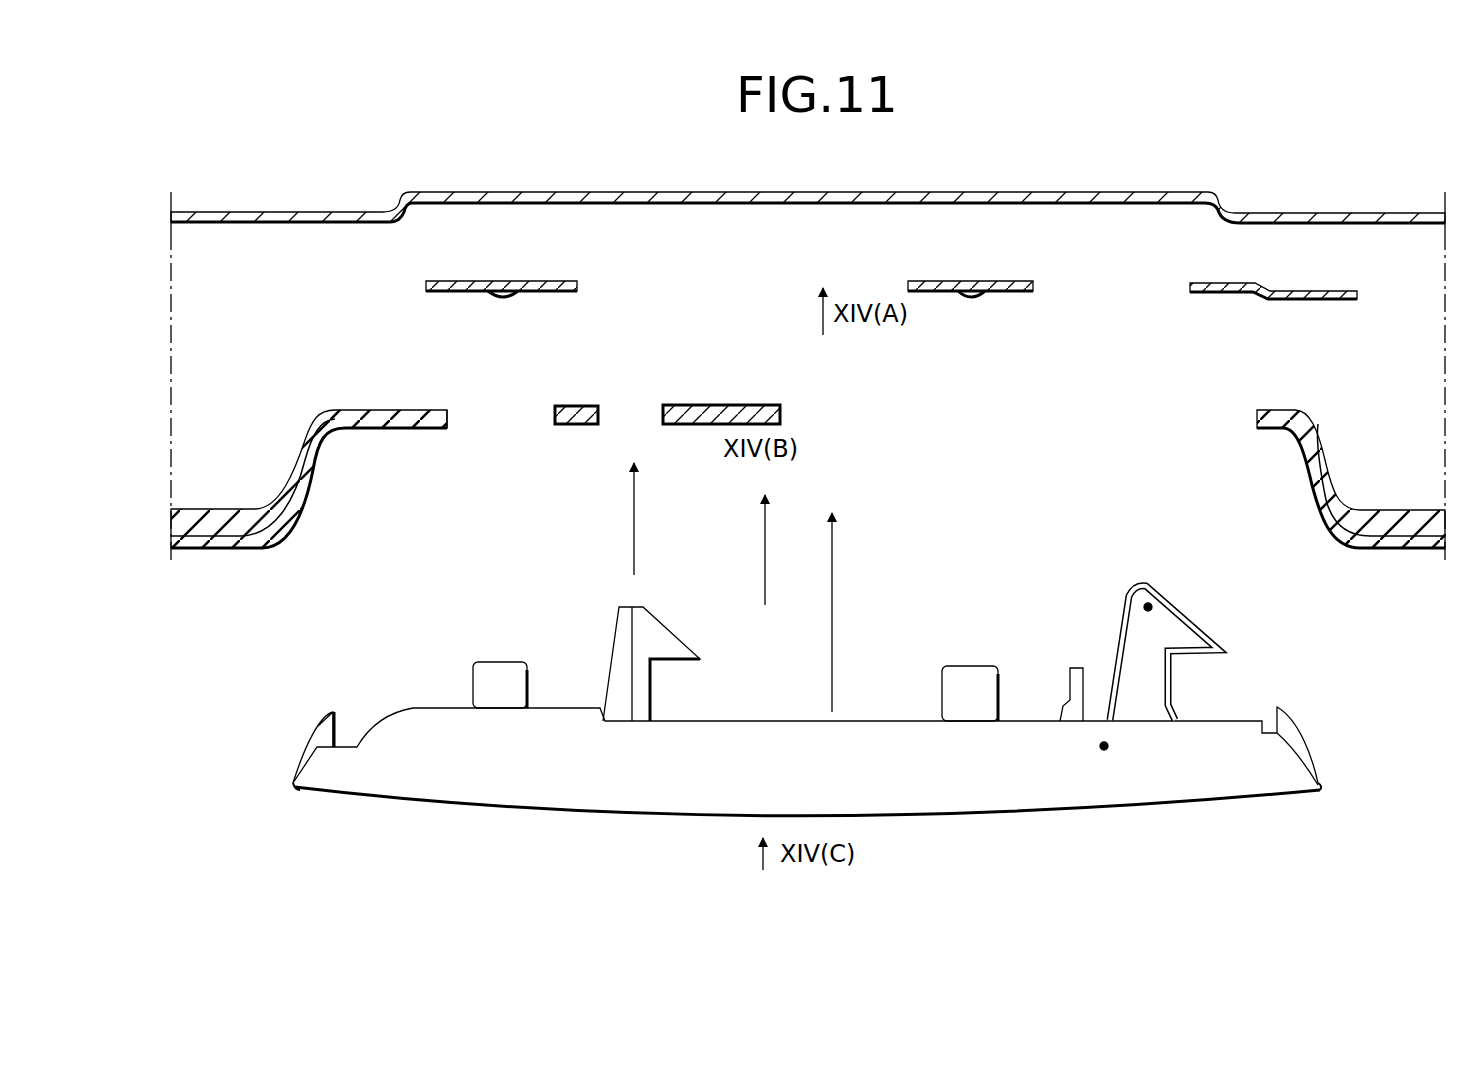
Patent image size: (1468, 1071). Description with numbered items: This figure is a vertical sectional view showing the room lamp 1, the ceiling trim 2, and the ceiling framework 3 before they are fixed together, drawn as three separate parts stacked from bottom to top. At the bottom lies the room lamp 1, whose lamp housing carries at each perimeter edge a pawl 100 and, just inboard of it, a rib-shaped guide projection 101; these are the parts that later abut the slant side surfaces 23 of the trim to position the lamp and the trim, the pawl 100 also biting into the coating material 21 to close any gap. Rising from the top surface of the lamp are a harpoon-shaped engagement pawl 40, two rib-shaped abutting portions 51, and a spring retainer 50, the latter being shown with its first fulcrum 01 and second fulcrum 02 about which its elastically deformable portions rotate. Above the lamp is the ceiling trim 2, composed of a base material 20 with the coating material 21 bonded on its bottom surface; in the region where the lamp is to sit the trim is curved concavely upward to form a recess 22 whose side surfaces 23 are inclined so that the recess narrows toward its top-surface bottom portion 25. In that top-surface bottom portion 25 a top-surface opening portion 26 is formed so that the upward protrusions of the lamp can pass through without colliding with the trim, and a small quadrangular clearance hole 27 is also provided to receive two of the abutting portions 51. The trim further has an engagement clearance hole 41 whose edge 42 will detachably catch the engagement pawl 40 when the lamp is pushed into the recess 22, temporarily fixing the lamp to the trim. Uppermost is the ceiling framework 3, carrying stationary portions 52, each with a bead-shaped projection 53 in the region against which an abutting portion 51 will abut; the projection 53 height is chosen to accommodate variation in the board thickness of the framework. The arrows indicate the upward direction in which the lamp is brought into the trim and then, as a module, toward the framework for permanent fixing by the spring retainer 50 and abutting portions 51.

The room lamp 1 is at (812, 717).
The ceiling trim 2 is at (315, 523).
The ceiling framework 3 is at (272, 198).
The base material 20 is at (1351, 508).
The coating material 21 is at (1395, 549).
The recess 22 is at (440, 430).
The slant side surface 23 is at (310, 492).
The top-surface bottom portion 25 is at (383, 430).
The top-surface opening portion 26 is at (1154, 408).
The clearance hole 27 is at (502, 408).
The engagement pawl 40 is at (667, 640).
The engagement clearance hole 41 is at (614, 405).
The edge 42 is at (663, 416).
The spring retainer 50 is at (1118, 630).
The abutting portion 51 is at (503, 673).
The stationary portion 52 is at (459, 280).
The projection 53 is at (501, 298).
The pawl 100 is at (292, 782).
The guide projection 101 is at (318, 726).
The first fulcrum 01 is at (1104, 750).
The second fulcrum 02 is at (1148, 603).